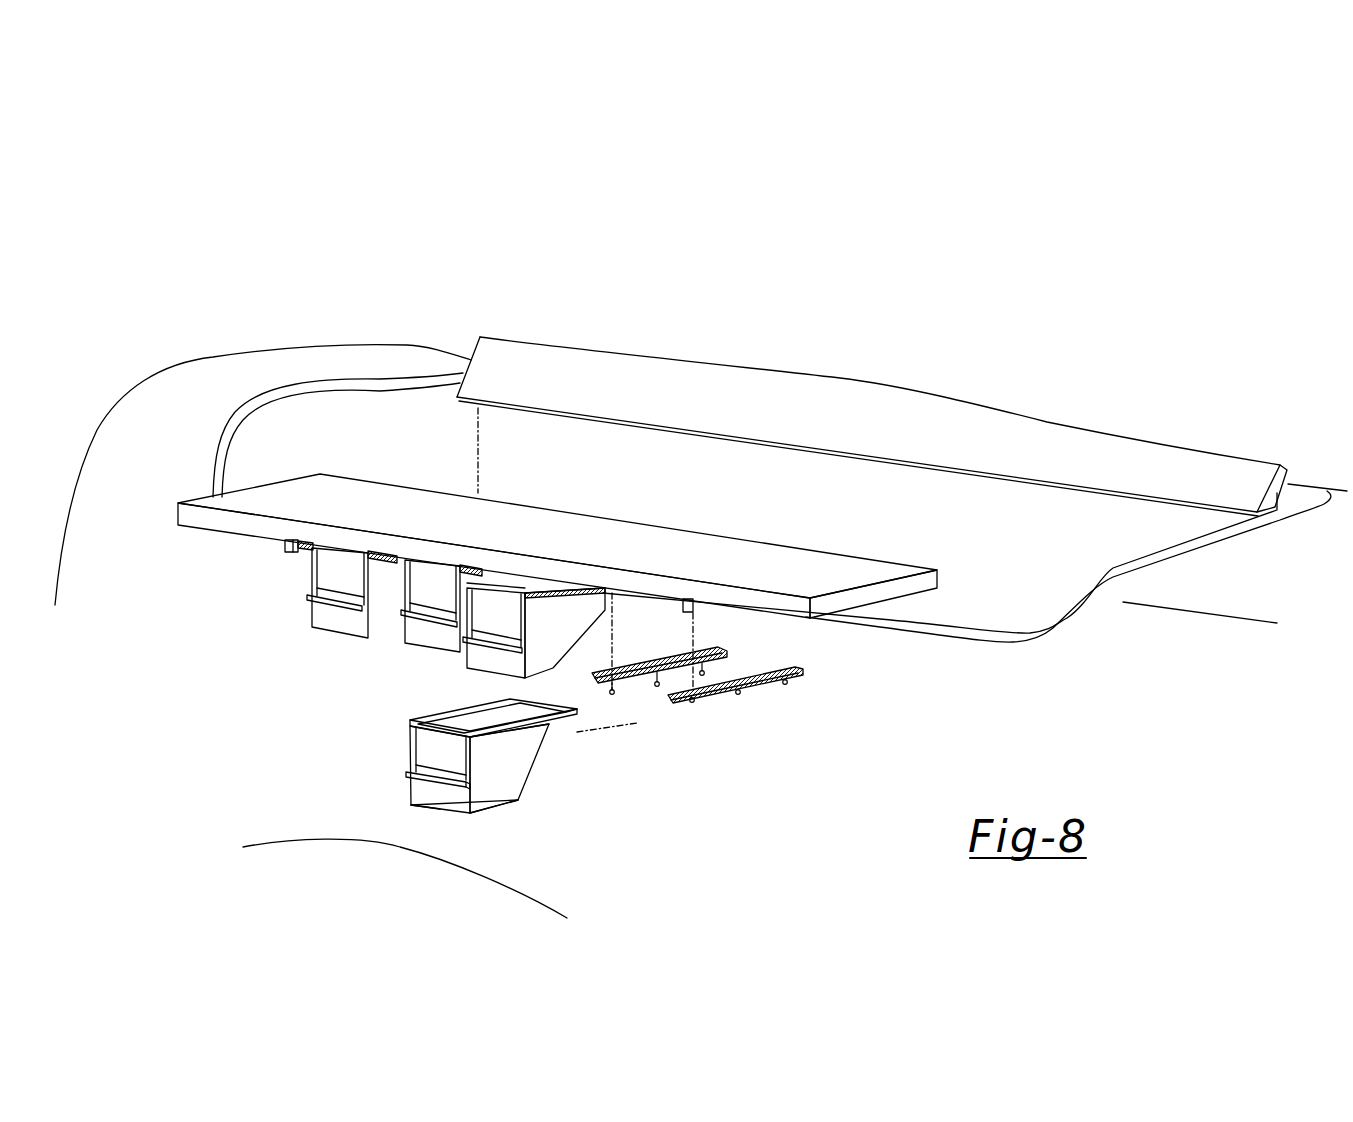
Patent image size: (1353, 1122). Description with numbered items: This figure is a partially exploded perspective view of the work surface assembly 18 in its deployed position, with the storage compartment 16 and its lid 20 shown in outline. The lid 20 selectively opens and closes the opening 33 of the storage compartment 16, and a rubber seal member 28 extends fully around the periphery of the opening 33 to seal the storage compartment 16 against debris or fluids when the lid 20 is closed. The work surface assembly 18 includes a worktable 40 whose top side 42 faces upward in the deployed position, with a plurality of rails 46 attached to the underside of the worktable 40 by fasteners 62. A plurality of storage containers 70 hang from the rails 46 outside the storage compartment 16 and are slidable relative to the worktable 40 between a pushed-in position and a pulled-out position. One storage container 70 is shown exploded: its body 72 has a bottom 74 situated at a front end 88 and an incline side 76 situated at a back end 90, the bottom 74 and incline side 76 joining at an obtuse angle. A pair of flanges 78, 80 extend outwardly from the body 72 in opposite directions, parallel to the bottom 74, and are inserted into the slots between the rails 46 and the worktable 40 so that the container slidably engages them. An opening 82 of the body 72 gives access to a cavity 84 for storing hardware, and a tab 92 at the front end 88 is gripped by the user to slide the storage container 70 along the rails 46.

The storage compartment 16 is at (806, 275).
The work surface assembly 18 is at (919, 707).
The lid 20 is at (862, 410).
The rubber seal member 28 is at (1050, 630).
The opening 33 is at (1127, 523).
The worktable 40 is at (185, 560).
The top side 42 is at (311, 503).
The rails 46 is at (733, 650).
The fasteners 62 is at (695, 700).
The storage containers 70 is at (297, 626).
The body 72 is at (453, 761).
The bottom 74 is at (503, 808).
The incline side 76 is at (531, 796).
The flange 78 is at (407, 718).
The flange 80 is at (578, 697).
The opening 82 is at (432, 742).
The cavity 84 is at (518, 711).
The front end 88 is at (443, 808).
The back end 90 is at (552, 728).
The tab 92 is at (468, 786).